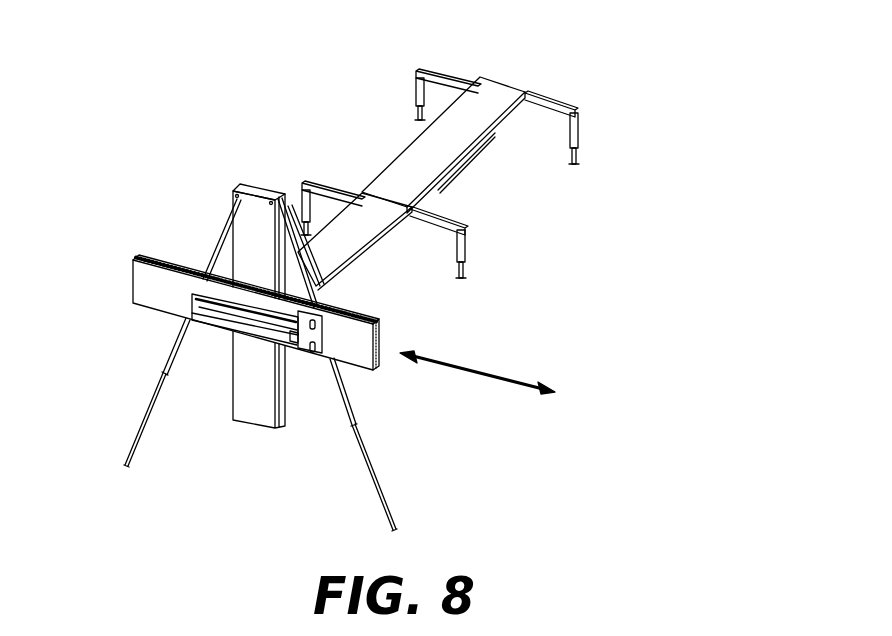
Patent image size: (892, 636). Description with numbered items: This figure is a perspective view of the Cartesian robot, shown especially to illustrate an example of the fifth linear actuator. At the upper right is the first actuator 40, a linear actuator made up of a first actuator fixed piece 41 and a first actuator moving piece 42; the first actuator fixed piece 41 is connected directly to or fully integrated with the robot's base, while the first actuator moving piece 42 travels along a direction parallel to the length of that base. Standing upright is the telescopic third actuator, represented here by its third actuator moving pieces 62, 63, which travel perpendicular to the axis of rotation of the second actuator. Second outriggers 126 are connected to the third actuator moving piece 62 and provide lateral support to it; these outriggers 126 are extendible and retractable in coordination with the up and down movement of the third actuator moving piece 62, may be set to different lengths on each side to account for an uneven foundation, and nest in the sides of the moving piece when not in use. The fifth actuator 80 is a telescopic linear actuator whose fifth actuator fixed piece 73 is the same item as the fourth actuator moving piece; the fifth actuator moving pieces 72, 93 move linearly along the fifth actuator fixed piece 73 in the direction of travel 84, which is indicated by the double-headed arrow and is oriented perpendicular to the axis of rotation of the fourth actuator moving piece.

The first actuator 40 is at (491, 77).
The first actuator fixed piece 41 is at (493, 97).
The first actuator moving piece 42 is at (357, 234).
The third actuator moving piece 62 is at (258, 207).
The third actuator moving piece 63 is at (318, 287).
The fifth actuator moving piece 72 is at (153, 286).
The fifth actuator fixed piece 73 is at (253, 288).
The fifth actuator 80 is at (381, 355).
The direction of travel 84 is at (488, 370).
The fifth actuator moving piece 93 is at (318, 354).
The second outriggers 126 is at (144, 434).